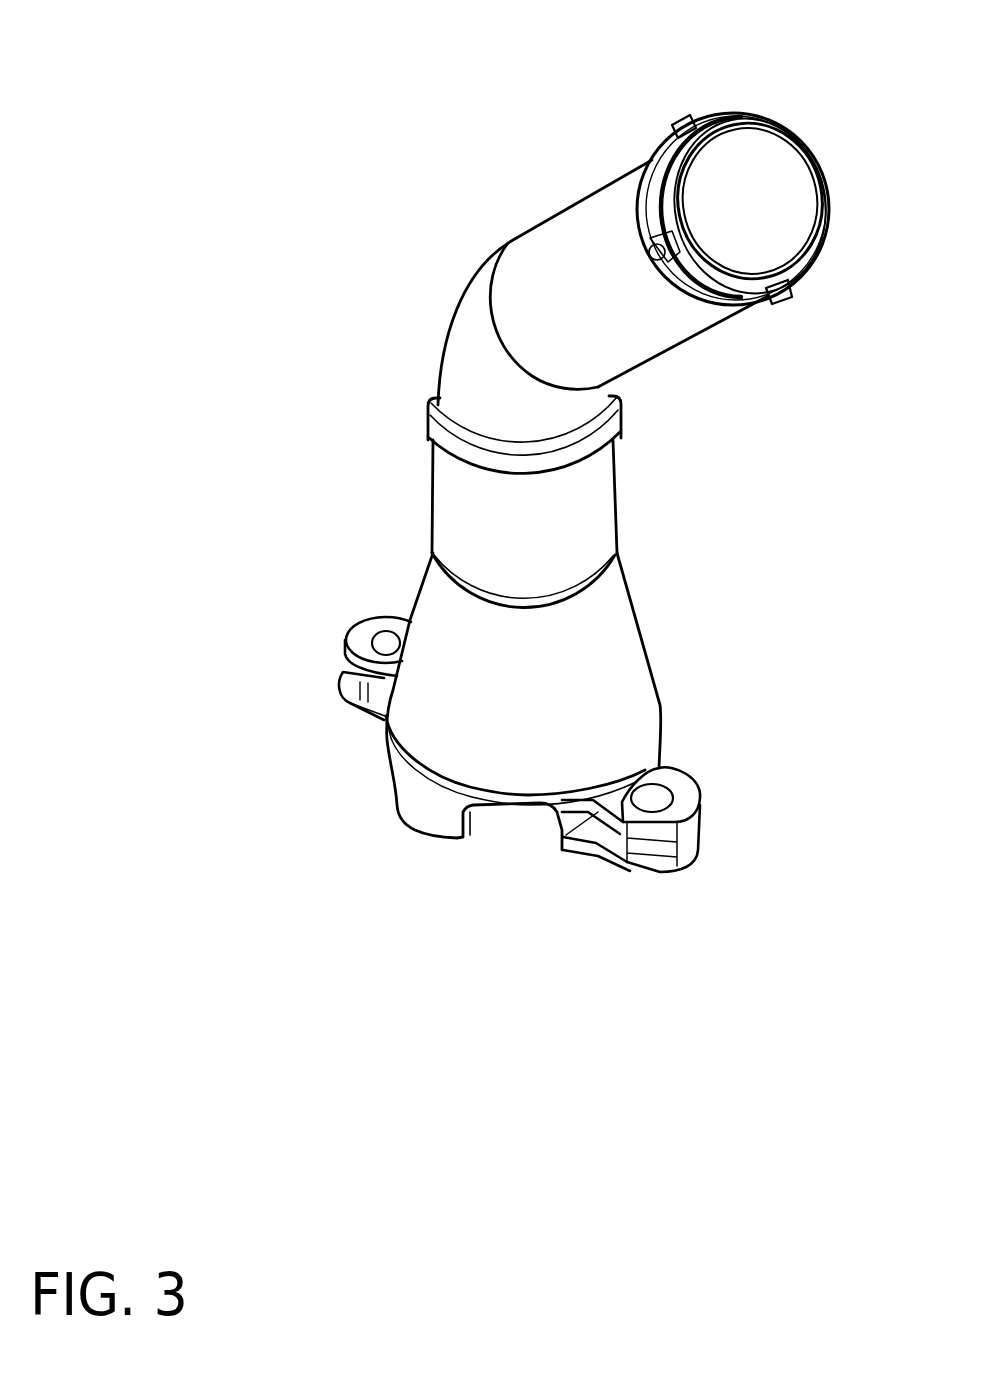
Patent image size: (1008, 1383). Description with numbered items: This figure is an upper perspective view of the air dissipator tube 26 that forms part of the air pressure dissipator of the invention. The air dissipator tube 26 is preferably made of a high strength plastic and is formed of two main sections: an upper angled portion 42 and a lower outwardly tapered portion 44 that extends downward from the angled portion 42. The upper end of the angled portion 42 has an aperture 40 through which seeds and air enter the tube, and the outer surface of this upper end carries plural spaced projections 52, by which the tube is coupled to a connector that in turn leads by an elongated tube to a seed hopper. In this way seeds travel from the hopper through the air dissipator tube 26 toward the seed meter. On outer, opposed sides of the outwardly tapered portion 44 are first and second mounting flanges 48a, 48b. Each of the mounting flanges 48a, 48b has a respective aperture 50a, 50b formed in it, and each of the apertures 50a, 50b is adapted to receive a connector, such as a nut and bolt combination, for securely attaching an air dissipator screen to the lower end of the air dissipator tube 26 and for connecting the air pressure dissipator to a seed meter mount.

The air dissipator tube 26 is at (388, 327).
The aperture 40 is at (771, 137).
The upper angled portion 42 is at (475, 272).
The lower outwardly tapered portion 44 is at (633, 605).
The first mounting flange 48a is at (345, 660).
The second mounting flange 48b is at (703, 803).
The aperture 50a is at (390, 642).
The aperture 50b is at (653, 798).
The plural spaced projections 52 is at (782, 305).